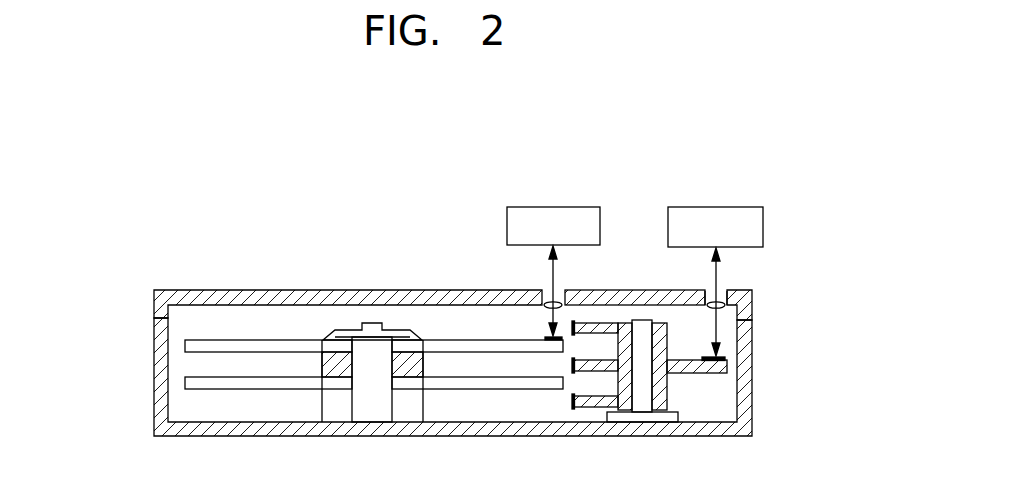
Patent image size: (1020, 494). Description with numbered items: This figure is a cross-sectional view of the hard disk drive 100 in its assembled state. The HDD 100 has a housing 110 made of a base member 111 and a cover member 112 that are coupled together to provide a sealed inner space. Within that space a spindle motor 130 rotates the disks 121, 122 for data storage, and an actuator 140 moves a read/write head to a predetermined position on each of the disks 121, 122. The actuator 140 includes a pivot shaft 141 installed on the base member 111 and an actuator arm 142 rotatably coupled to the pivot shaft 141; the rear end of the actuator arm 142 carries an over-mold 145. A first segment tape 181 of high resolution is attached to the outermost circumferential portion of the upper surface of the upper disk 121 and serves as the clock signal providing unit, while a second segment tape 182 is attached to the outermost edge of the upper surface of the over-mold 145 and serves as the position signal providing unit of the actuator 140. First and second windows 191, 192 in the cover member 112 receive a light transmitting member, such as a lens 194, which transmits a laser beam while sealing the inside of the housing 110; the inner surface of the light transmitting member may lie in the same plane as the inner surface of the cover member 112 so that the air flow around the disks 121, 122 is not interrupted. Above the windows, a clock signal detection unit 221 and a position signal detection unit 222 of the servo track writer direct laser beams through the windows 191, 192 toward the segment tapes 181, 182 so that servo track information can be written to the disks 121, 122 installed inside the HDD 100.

The hard disk drive 100 is at (140, 246).
The housing 110 is at (92, 298).
The base member 111 is at (154, 363).
The cover member 112 is at (154, 305).
The upper disk 121 is at (500, 352).
The disk 122 is at (443, 389).
The spindle motor 130 is at (375, 412).
The actuator 140 is at (692, 402).
The pivot shaft 141 is at (642, 422).
The actuator arm 142 is at (582, 408).
The over-mold 145 is at (722, 375).
The first segment tape 181 is at (550, 337).
The second segment tape 182 is at (722, 353).
The first window 191 is at (558, 296).
The second window 192 is at (718, 298).
The lens 194 is at (720, 309).
The clock signal detection unit 221 is at (553, 205).
The position signal detection unit 222 is at (716, 205).